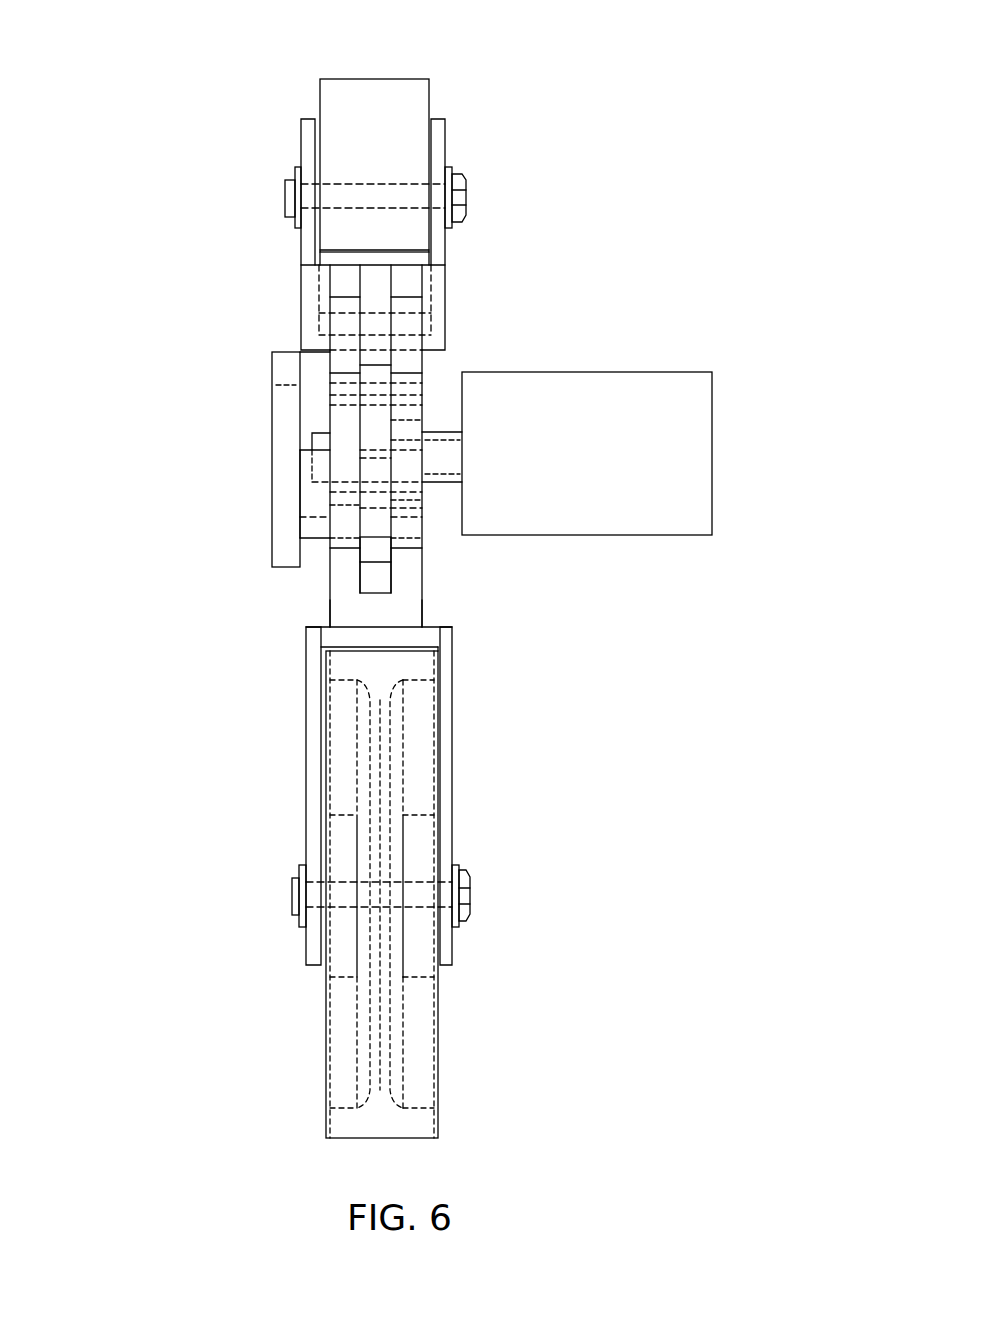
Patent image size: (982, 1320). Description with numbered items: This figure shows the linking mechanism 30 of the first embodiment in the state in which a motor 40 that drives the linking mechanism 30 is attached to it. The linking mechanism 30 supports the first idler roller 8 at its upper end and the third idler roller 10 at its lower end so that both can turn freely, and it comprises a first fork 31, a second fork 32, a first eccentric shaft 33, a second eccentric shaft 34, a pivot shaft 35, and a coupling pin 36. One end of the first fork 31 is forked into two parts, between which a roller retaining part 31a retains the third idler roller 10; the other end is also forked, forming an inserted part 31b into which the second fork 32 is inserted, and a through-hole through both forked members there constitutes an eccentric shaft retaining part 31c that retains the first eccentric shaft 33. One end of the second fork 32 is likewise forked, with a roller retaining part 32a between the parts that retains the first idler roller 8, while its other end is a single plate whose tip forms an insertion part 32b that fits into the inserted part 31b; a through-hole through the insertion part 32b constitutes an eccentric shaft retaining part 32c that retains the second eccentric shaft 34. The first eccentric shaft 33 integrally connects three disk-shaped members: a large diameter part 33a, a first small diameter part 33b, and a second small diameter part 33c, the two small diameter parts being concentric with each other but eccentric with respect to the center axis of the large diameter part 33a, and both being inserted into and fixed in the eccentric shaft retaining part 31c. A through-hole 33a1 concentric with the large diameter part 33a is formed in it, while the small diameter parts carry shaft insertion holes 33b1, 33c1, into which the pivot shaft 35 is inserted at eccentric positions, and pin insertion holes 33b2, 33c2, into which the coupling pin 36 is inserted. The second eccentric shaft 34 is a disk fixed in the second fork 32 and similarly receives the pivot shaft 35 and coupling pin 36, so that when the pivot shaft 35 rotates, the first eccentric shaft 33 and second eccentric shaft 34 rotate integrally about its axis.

The first idler roller 8 is at (343, 90).
The third idler roller 10 is at (440, 1067).
The linking mechanism 30 is at (246, 484).
The first fork 31 is at (456, 675).
The roller retaining part 31a is at (447, 817).
The inserted part 31b is at (340, 563).
The eccentric shaft retaining part 31c is at (413, 549).
The second fork 32 is at (298, 305).
The roller retaining part 32a is at (442, 282).
The insertion part 32b is at (383, 563).
The eccentric shaft retaining part 32c is at (377, 533).
The first eccentric shaft 33 is at (266, 564).
The large diameter part 33a is at (272, 353).
The through-hole 33a1 is at (283, 385).
The first small diameter part 33b is at (345, 426).
The shaft insertion hole 33b1 is at (343, 436).
The pin insertion hole 33b2 is at (350, 507).
The second small diameter part 33c is at (410, 422).
The shaft insertion hole 33c1 is at (413, 440).
The pin insertion hole 33c2 is at (423, 487).
The second eccentric shaft 34 is at (374, 552).
The pivot shaft 35 is at (440, 433).
The coupling pin 36 is at (424, 500).
The motor 40 is at (712, 416).